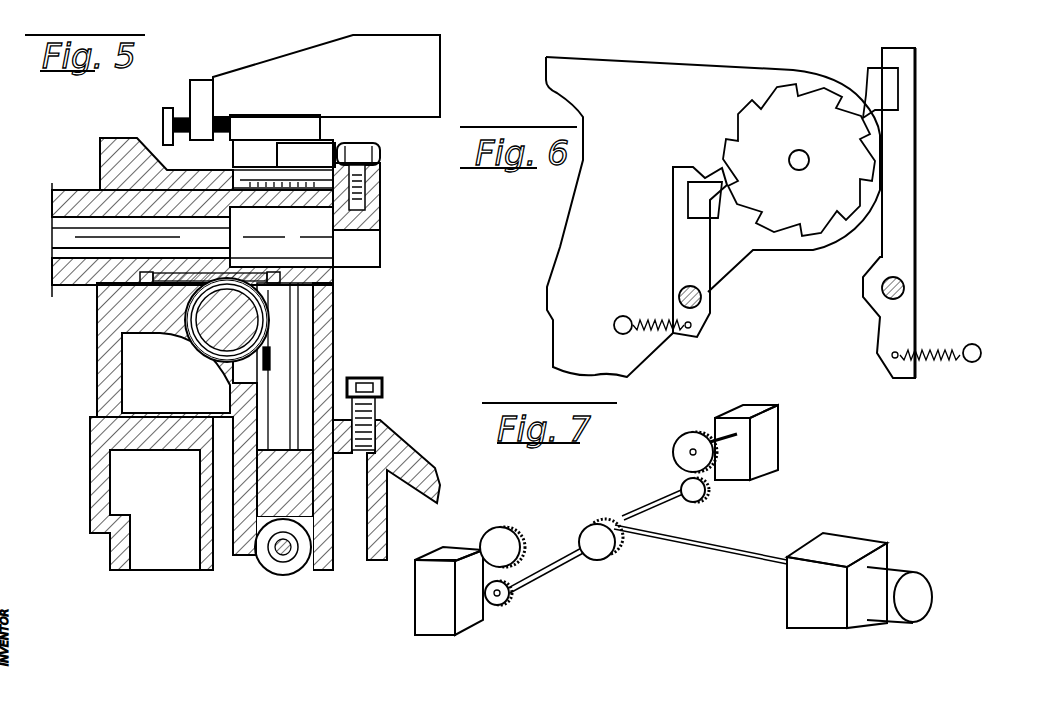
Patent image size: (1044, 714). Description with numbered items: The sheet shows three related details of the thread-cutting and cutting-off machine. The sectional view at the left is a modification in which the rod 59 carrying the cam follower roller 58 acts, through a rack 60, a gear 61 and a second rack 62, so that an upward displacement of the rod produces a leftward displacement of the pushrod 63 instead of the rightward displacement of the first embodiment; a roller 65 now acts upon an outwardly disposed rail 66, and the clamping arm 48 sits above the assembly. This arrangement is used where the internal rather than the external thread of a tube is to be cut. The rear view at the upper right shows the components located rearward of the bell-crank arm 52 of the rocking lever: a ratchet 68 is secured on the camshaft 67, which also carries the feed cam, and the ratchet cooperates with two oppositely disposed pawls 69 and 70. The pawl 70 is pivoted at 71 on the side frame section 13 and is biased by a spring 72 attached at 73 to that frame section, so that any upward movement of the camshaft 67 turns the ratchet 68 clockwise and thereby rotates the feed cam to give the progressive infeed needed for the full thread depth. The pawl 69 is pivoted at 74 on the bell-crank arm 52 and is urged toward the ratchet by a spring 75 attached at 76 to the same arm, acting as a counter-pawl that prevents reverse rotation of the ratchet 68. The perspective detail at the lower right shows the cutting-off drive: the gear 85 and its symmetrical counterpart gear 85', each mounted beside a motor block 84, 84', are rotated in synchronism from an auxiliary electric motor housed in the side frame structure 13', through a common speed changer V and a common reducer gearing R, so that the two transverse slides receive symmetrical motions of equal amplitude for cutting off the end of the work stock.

In FIG. 5, the side frame section 13 is at (136, 462).
In FIG. 7, the side frame structure / auxiliary electric motor 13' is at (899, 611).
In FIG. 5, the arm 48 is at (326, 76).
In FIG. 6, the bell-crank arm 52 is at (653, 78).
In FIG. 5, the cam follower roller 58 is at (284, 576).
In FIG. 5, the rod 59 is at (293, 352).
In FIG. 5, the rack 60 is at (240, 312).
In FIG. 5, the gear 61 is at (337, 300).
In FIG. 5, the rack 62 is at (168, 280).
In FIG. 5, the pushrod 63 is at (62, 200).
In FIG. 5, the roller 65 is at (383, 153).
In FIG. 5, the rail 66 is at (322, 155).
In FIG. 6, the camshaft 67 is at (803, 154).
In FIG. 6, the ratchet 68 is at (770, 90).
In FIG. 6, the pawl 69 is at (680, 238).
In FIG. 6, the pawl 70 is at (910, 177).
In FIG. 6, the pivot 71 is at (906, 288).
In FIG. 6, the spring 72 is at (928, 370).
In FIG. 6, the spring attachment point 73 is at (980, 348).
In FIG. 6, the pivot 74 is at (704, 297).
In FIG. 6, the spring 75 is at (650, 318).
In FIG. 6, the spring attachment point 76 is at (613, 326).
In FIG. 7, the motor 84 is at (449, 605).
In FIG. 7, the motor 84' is at (767, 442).
In FIG. 7, the gear 85 is at (502, 547).
In FIG. 7, the gear 85' is at (687, 463).
In FIG. 7, the reducer gearing R is at (622, 548).
In FIG. 7, the speed changer V is at (803, 598).